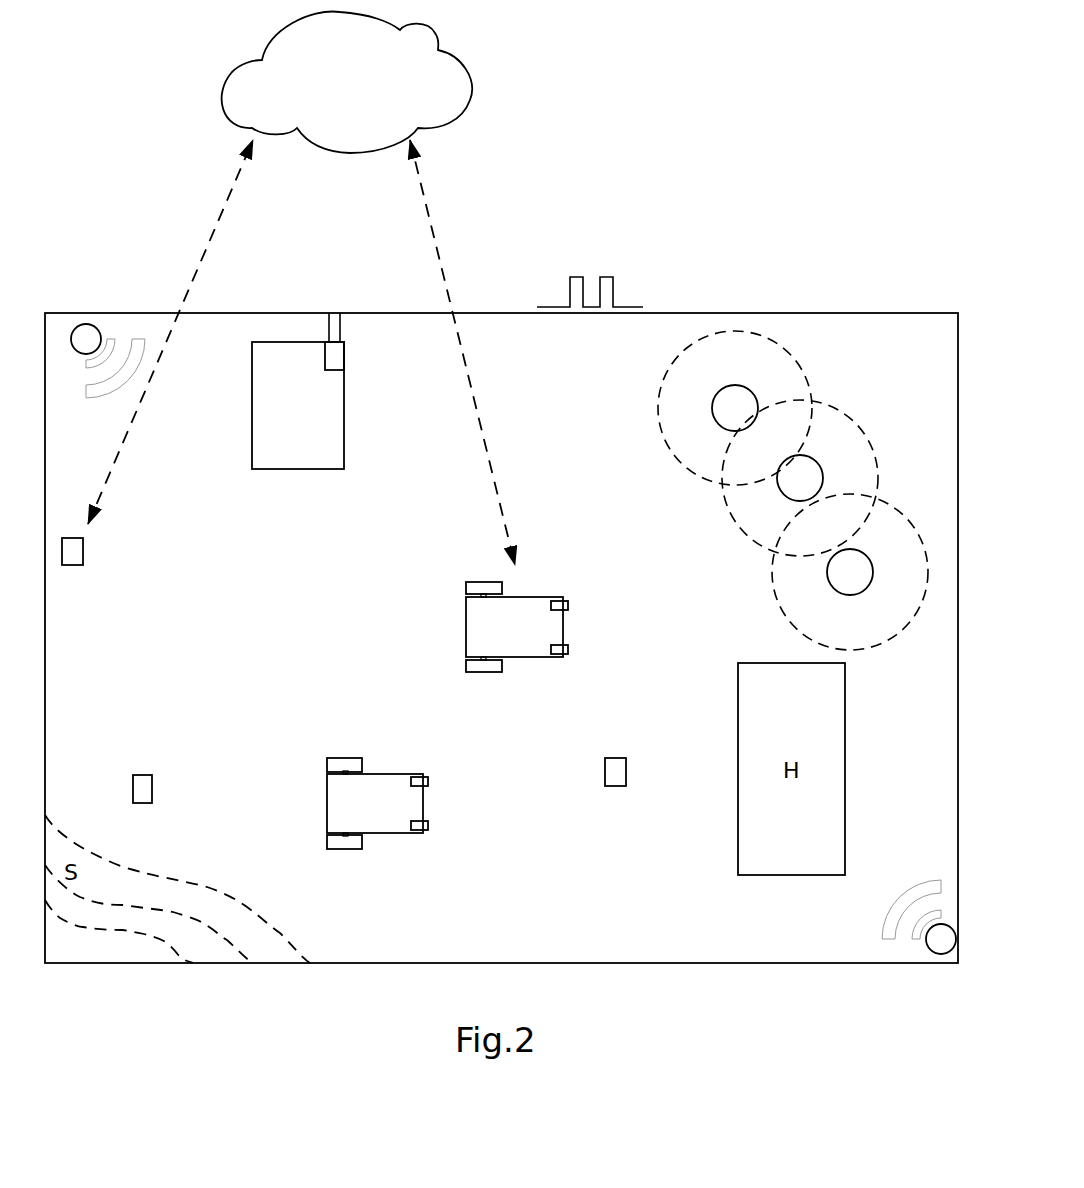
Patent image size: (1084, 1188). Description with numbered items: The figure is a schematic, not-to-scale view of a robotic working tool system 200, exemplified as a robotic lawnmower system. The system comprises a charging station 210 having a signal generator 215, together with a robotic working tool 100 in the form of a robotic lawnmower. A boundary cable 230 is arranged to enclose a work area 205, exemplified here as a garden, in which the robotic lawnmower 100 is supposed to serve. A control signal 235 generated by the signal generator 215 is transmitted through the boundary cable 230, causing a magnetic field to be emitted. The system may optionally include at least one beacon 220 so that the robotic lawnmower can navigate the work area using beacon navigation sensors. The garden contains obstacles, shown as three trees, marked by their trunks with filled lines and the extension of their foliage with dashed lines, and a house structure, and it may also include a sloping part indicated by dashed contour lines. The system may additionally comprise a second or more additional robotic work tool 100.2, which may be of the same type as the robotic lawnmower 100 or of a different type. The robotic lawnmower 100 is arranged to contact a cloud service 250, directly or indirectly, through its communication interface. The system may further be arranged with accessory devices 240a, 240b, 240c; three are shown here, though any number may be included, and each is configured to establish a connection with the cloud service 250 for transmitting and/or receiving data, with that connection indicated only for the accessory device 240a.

The robotic working tool 100 is at (505, 657).
The additional robotic work tool 100.2 is at (365, 833).
The robotic working tool system 200 is at (222, 305).
The work area 205 is at (430, 937).
The charging station 210 is at (252, 383).
The signal generator 215 is at (340, 357).
The beacon 220 is at (75, 350).
The boundary cable 230 is at (868, 313).
The control signal 235 is at (613, 275).
The accessory device 240a is at (76, 552).
The accessory device 240b is at (147, 788).
The accessory device 240c is at (620, 772).
The cloud service 250 is at (347, 82).